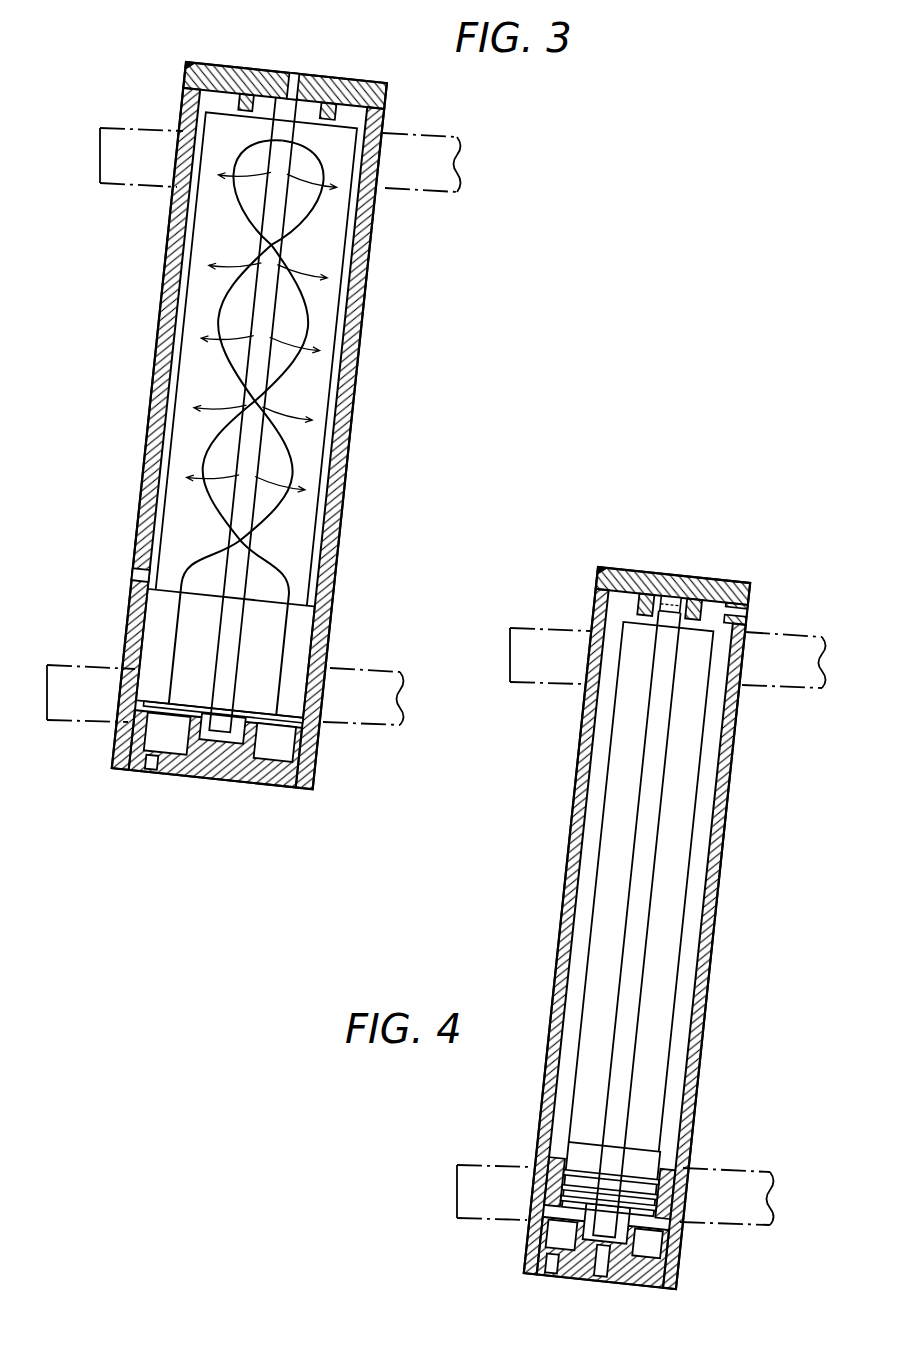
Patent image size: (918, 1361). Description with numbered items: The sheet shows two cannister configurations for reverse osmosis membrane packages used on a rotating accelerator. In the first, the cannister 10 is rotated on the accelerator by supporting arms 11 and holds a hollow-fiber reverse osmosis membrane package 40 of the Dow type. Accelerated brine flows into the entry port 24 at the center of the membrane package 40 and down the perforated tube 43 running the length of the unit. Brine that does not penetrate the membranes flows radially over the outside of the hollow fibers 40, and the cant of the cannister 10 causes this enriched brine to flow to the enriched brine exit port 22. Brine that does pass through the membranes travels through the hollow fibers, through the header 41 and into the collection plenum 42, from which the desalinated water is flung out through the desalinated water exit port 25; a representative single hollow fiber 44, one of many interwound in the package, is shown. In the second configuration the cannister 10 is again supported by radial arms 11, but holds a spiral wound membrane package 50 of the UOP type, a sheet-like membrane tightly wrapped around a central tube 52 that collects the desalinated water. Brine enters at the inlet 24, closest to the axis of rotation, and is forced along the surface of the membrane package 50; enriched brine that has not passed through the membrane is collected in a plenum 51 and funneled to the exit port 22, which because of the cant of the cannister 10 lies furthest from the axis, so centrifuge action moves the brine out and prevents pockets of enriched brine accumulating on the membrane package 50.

In FIG. 3, the cannister 10 is at (165, 316).
In FIG. 4, the cannister 10 is at (718, 857).
In FIG. 3, the supporting arms 11 is at (438, 188).
In FIG. 4, the supporting arms 11 is at (788, 683).
In FIG. 3, the enriched brine exit port 22 is at (140, 571).
In FIG. 4, the enriched brine exit port 22 is at (549, 1277).
In FIG. 3, the entry port 24 is at (292, 72).
In FIG. 4, the entry port 24 is at (751, 612).
In FIG. 3, the desalinated water exit port 25 is at (147, 768).
In FIG. 4, the desalinated water exit port 25 is at (600, 1283).
In FIG. 3, the hollow-fiber reverse osmosis membrane package 40 is at (330, 285).
In FIG. 3, the header 41 is at (302, 622).
In FIG. 3, the collection plenum 42 is at (275, 750).
In FIG. 3, the perforated tube 43 is at (258, 452).
In FIG. 3, the hollow fiber 44 is at (300, 368).
In FIG. 4, the spiral wound membrane package 50 is at (687, 798).
In FIG. 4, the plenum 51 is at (543, 1208).
In FIG. 4, the central tube 52 is at (647, 917).